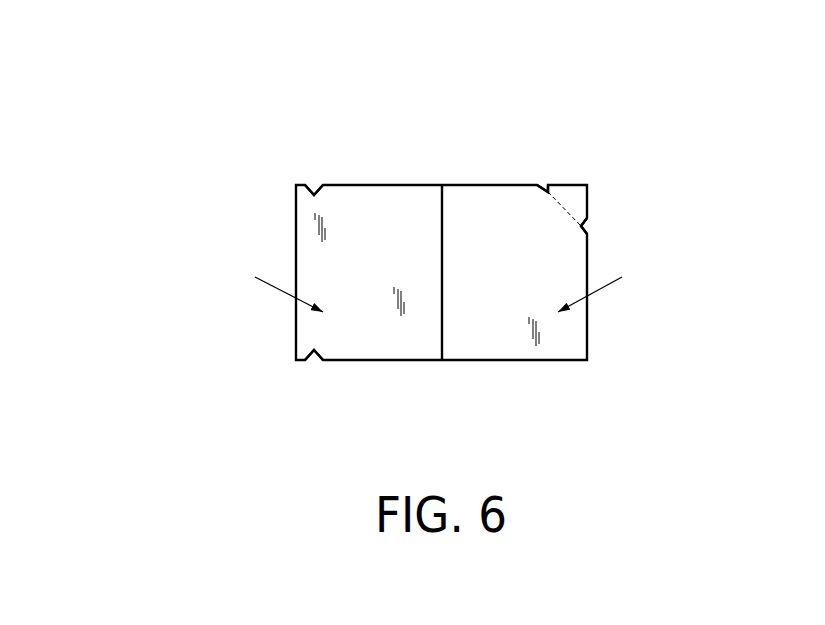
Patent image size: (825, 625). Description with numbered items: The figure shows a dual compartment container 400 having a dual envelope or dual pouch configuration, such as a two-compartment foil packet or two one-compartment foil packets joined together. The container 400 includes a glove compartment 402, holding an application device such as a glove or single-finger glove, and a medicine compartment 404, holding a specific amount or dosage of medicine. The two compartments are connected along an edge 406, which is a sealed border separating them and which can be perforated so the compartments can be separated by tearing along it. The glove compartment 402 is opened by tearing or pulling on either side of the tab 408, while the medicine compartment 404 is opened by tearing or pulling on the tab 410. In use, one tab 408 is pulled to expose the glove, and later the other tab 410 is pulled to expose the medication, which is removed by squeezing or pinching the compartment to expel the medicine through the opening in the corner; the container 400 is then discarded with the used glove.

The dual compartment container 400 is at (418, 93).
The glove compartment 402 is at (373, 200).
The medicine compartment 404 is at (500, 203).
The edge 406 is at (442, 368).
The tab 408 is at (303, 172).
The tab 410 is at (578, 200).